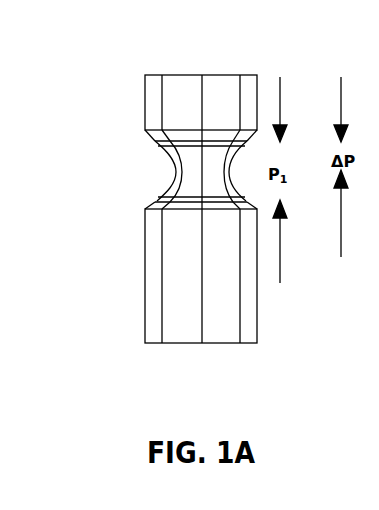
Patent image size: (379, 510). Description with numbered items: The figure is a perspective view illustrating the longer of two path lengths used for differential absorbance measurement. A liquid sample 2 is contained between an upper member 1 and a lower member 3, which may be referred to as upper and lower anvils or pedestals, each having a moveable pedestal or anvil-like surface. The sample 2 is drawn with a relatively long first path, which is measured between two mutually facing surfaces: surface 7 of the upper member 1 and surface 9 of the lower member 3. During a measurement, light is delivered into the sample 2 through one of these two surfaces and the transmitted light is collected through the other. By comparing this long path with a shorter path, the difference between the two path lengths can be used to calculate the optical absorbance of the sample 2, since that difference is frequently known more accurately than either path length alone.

The upper member 1 is at (217, 75).
The sample 2 is at (212, 172).
The surface 7 is at (183, 143).
The surface 9 is at (186, 191).
The lower member 3 is at (217, 343).